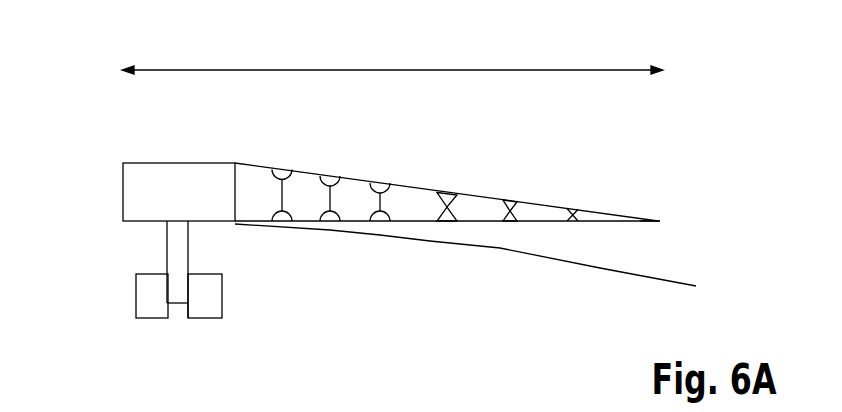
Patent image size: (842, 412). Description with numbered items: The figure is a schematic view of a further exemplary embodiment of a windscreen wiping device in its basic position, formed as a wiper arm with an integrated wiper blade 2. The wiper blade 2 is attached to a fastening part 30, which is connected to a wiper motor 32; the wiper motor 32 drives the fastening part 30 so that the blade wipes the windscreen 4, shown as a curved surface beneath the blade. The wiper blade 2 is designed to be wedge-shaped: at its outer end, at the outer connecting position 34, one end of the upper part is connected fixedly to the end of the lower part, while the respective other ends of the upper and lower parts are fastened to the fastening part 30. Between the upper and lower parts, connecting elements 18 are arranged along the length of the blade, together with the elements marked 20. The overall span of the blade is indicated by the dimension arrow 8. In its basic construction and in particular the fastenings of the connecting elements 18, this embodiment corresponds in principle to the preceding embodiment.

The wiper blade 2 is at (574, 146).
The windscreen 4 is at (648, 280).
The blade length 8 is at (405, 68).
The connecting elements 18 is at (290, 183).
The electrode 20 is at (282, 164).
The fastening part 30 is at (126, 190).
The wiper motor 32 is at (147, 294).
The outer connecting position 34 is at (661, 220).